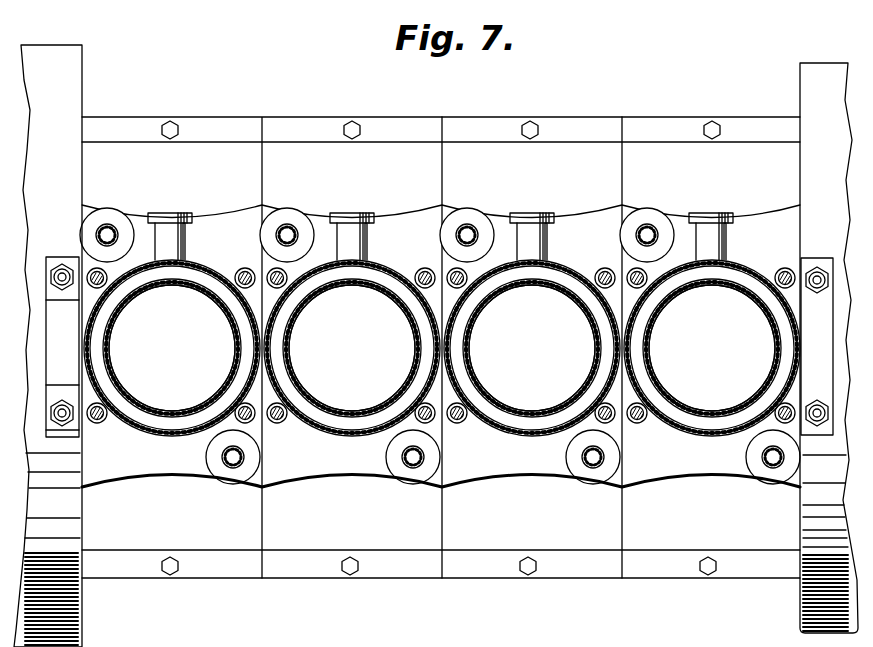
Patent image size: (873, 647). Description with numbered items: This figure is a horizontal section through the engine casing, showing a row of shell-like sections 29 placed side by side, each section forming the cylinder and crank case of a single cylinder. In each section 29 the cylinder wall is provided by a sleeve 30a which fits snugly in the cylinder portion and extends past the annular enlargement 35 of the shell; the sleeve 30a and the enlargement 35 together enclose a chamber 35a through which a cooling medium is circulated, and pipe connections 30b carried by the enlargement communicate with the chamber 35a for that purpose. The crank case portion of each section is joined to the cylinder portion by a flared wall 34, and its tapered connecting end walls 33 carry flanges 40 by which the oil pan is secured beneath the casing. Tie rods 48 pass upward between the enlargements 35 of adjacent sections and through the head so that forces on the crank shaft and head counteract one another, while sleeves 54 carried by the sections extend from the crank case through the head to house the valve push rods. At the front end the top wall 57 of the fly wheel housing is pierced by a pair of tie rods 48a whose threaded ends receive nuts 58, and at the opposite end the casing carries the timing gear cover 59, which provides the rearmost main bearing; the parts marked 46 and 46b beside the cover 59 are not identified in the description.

The section 29 is at (393, 530).
The sleeve 30a is at (295, 316).
The pipe connections 30b is at (390, 198).
The tapered connecting end walls 33 is at (310, 148).
The flared wall 34 is at (152, 470).
The annular enlargement 35 is at (340, 435).
The chamber 35a is at (335, 424).
The flanges 40 is at (226, 103).
The right end nut 46 is at (819, 295).
The right end lower nut 46b is at (817, 400).
The tie rods 48 is at (102, 408).
The tie rods 48a is at (58, 405).
The sleeves 54 is at (413, 470).
The top wall 57 is at (55, 505).
The nuts 58 is at (70, 258).
The timing gear cover 59 is at (826, 73).